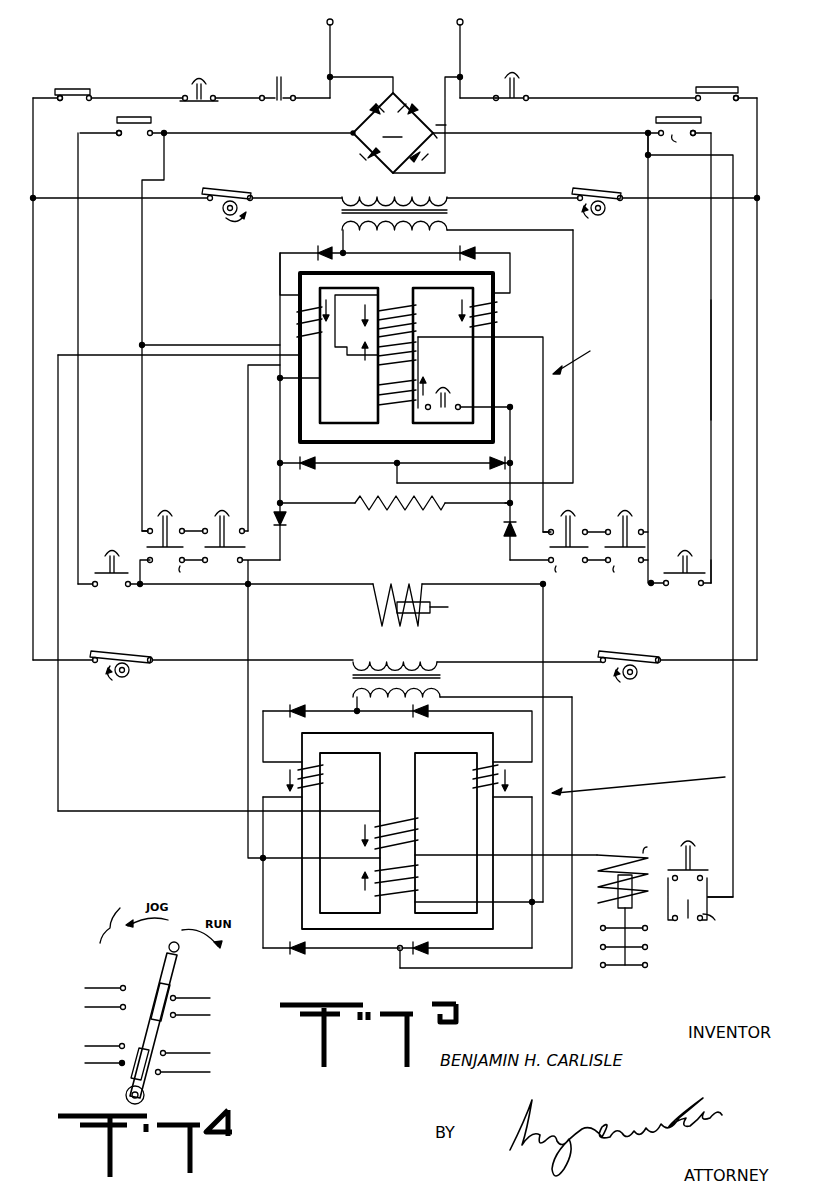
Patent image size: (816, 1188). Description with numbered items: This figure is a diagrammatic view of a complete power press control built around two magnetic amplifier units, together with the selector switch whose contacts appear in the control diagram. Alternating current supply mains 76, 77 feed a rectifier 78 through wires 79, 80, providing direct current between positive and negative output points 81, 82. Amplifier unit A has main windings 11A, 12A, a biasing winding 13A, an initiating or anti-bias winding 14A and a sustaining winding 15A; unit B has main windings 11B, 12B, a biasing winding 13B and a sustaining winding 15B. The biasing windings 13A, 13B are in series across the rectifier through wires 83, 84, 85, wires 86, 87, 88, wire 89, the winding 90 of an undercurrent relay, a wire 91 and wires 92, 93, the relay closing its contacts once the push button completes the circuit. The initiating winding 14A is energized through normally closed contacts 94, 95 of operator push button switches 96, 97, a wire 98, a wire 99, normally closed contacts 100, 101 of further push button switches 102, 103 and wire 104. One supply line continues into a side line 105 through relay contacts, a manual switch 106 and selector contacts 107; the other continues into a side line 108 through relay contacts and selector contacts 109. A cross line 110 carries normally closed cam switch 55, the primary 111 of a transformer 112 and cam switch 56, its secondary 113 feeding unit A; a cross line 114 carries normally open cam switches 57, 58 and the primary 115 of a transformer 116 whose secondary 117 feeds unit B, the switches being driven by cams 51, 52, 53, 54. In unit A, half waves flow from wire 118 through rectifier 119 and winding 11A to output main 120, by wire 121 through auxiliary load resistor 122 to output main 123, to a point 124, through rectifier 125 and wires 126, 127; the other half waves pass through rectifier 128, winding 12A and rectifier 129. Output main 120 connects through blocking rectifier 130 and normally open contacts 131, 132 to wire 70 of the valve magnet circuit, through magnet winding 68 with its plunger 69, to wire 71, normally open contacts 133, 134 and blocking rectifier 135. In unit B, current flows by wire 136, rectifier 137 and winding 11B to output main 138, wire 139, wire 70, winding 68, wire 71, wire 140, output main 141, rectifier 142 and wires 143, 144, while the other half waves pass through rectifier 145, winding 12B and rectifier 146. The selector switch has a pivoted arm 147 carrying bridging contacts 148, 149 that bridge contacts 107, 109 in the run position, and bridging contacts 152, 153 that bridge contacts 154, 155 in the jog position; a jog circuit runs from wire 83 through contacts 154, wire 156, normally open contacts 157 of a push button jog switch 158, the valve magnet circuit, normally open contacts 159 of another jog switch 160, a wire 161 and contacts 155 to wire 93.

In FIG. 3, the A. C. supply main 76 is at (332, 44).
In FIG. 3, the A. C. supply main 77 is at (457, 50).
In FIG. 3, the rectifier 78 is at (397, 133).
In FIG. 3, the wire 79 is at (383, 74).
In FIG. 3, the wire 80 is at (455, 78).
In FIG. 3, the positive output point 81 is at (352, 133).
In FIG. 3, the negative output point 82 is at (437, 138).
In FIG. 3, the wire 83 is at (206, 125).
In FIG. 3, the wire 84 is at (142, 312).
In FIG. 3, the wire 85 is at (153, 344).
In FIG. 3, the wire 86 is at (155, 358).
In FIG. 3, the wire 87 is at (58, 453).
In FIG. 3, the wire 88 is at (156, 802).
In FIG. 3, the wire 89 is at (572, 856).
In FIG. 3, the winding of undercurrent relay 90 is at (640, 852).
In FIG. 3, the wire 91 is at (661, 899).
In FIG. 3, the wire 92 is at (670, 160).
In FIG. 3, the wire 93 is at (608, 122).
In FIG. 3, the normally closed contact 94 is at (142, 532).
In FIG. 3, the normally closed contact 95 is at (246, 528).
In FIG. 3, the operator switch 96 is at (171, 509).
In FIG. 3, the operator switch 97 is at (219, 509).
In FIG. 3, the wire 98 is at (246, 410).
In FIG. 3, the wire 99 is at (543, 402).
In FIG. 3, the normally closed contact 100 is at (548, 536).
In FIG. 3, the normally closed contact 101 is at (644, 528).
In FIG. 3, the operator push button switch 102 is at (570, 508).
In FIG. 3, the operator push button switch 103 is at (622, 512).
In FIG. 3, the wire 104 is at (648, 400).
In FIG. 3, the side line 105 is at (33, 312).
In FIG. 3, the manual switch 106 is at (212, 96).
In FIG. 3, the normally closed contacts of selector switch 107 is at (76, 104).
In FIG. 4, the normally closed contacts of selector switch 107 is at (178, 1018).
In FIG. 3, the side line 108 is at (763, 365).
In FIG. 3, the normally closed contacts of selector switch 109 is at (714, 103).
In FIG. 4, the normally closed contacts of selector switch 109 is at (166, 1063).
In FIG. 3, the cross line 110 is at (48, 190).
In FIG. 3, the primary 111 is at (445, 196).
In FIG. 3, the transformer 112 is at (447, 224).
In FIG. 3, the secondary 113 is at (341, 240).
In FIG. 3, the cross line 114 is at (51, 659).
In FIG. 3, the primary 115 is at (415, 660).
In FIG. 3, the transformer 116 is at (440, 690).
In FIG. 3, the secondary 117 is at (352, 696).
In FIG. 3, the wire 118 is at (358, 253).
In FIG. 3, the rectifier 119 is at (316, 246).
In FIG. 3, the output main 120 is at (279, 437).
In FIG. 3, the wire 121 is at (326, 504).
In FIG. 3, the auxiliary load resistor 122 is at (394, 499).
In FIG. 3, the output main 123 is at (505, 500).
In FIG. 3, the point 124 is at (506, 470).
In FIG. 3, the rectifier 125 is at (490, 456).
In FIG. 3, the wire 126 is at (397, 472).
In FIG. 3, the wire 127 is at (572, 270).
In FIG. 3, the rectifier 128 is at (312, 455).
In FIG. 3, the rectifier 129 is at (480, 242).
In FIG. 3, the blocking rectifier 130 is at (284, 520).
In FIG. 3, the normally open contact 131 is at (238, 566).
In FIG. 3, the normally open contact 132 is at (200, 574).
In FIG. 3, the normally open contact 133 is at (601, 574).
In FIG. 3, the normally open contact 134 is at (536, 574).
In FIG. 3, the blocking rectifier 135 is at (506, 537).
In FIG. 3, the wire 136 is at (376, 722).
In FIG. 3, the rectifier 137 is at (286, 704).
In FIG. 3, the output main 138 is at (258, 873).
In FIG. 3, the wire 139 is at (246, 700).
In FIG. 3, the wire 140 is at (543, 636).
In FIG. 3, the output main 141 is at (532, 918).
In FIG. 3, the rectifier 142 is at (428, 952).
In FIG. 3, the wire 143 is at (355, 952).
In FIG. 3, the wire 144 is at (572, 718).
In FIG. 3, the rectifier 145 is at (300, 952).
In FIG. 3, the rectifier 146 is at (430, 716).
In FIG. 4, the pivoted arm 147 is at (184, 967).
In FIG. 3, the bridging contact 148 is at (75, 93).
In FIG. 4, the bridging contact 148 is at (186, 989).
In FIG. 3, the bridging contact 149 is at (727, 84).
In FIG. 4, the bridging contact 149 is at (152, 1090).
In FIG. 3, the bridging contact 152 is at (135, 118).
In FIG. 4, the bridging contact 152 is at (151, 981).
In FIG. 3, the bridging contact 153 is at (666, 117).
In FIG. 4, the bridging contact 153 is at (134, 1040).
In FIG. 3, the jog contacts 154 is at (132, 140).
In FIG. 4, the jog contacts 154 is at (118, 1005).
In FIG. 3, the jog contacts 155 is at (690, 144).
In FIG. 4, the jog contacts 155 is at (118, 1070).
In FIG. 3, the wire 156 is at (78, 312).
In FIG. 3, the normally open contacts 157 is at (108, 588).
In FIG. 3, the push button jog switch 158 is at (110, 559).
In FIG. 3, the normally open contacts 159 is at (690, 588).
In FIG. 3, the push button jog switch 160 is at (681, 558).
In FIG. 3, the wire 161 is at (711, 366).
In FIG. 3, the cam 51 is at (220, 212).
In FIG. 3, the cam 52 is at (606, 212).
In FIG. 3, the cam 53 is at (130, 676).
In FIG. 3, the cam 54 is at (638, 678).
In FIG. 3, the cam operated switch 55 is at (240, 178).
In FIG. 3, the cam operated switch 56 is at (610, 178).
In FIG. 3, the cam operated switch 57 is at (128, 652).
In FIG. 3, the cam operated switch 58 is at (630, 652).
In FIG. 3, the winding 68 is at (387, 605).
In FIG. 3, the plunger 69 is at (426, 616).
In FIG. 3, the wire 70 is at (316, 588).
In FIG. 3, the wire 71 is at (460, 576).
In FIG. 3, the main winding 11A is at (290, 320).
In FIG. 3, the main winding 12A is at (498, 318).
In FIG. 3, the biasing winding 13A is at (424, 313).
In FIG. 3, the initiating or anti-bias winding 14A is at (420, 360).
In FIG. 3, the sustaining winding 15A is at (376, 394).
In FIG. 3, the main winding 11B is at (325, 782).
In FIG. 3, the main winding 12B is at (474, 782).
In FIG. 3, the biasing winding 13B is at (420, 830).
In FIG. 3, the sustaining winding 15B is at (420, 880).